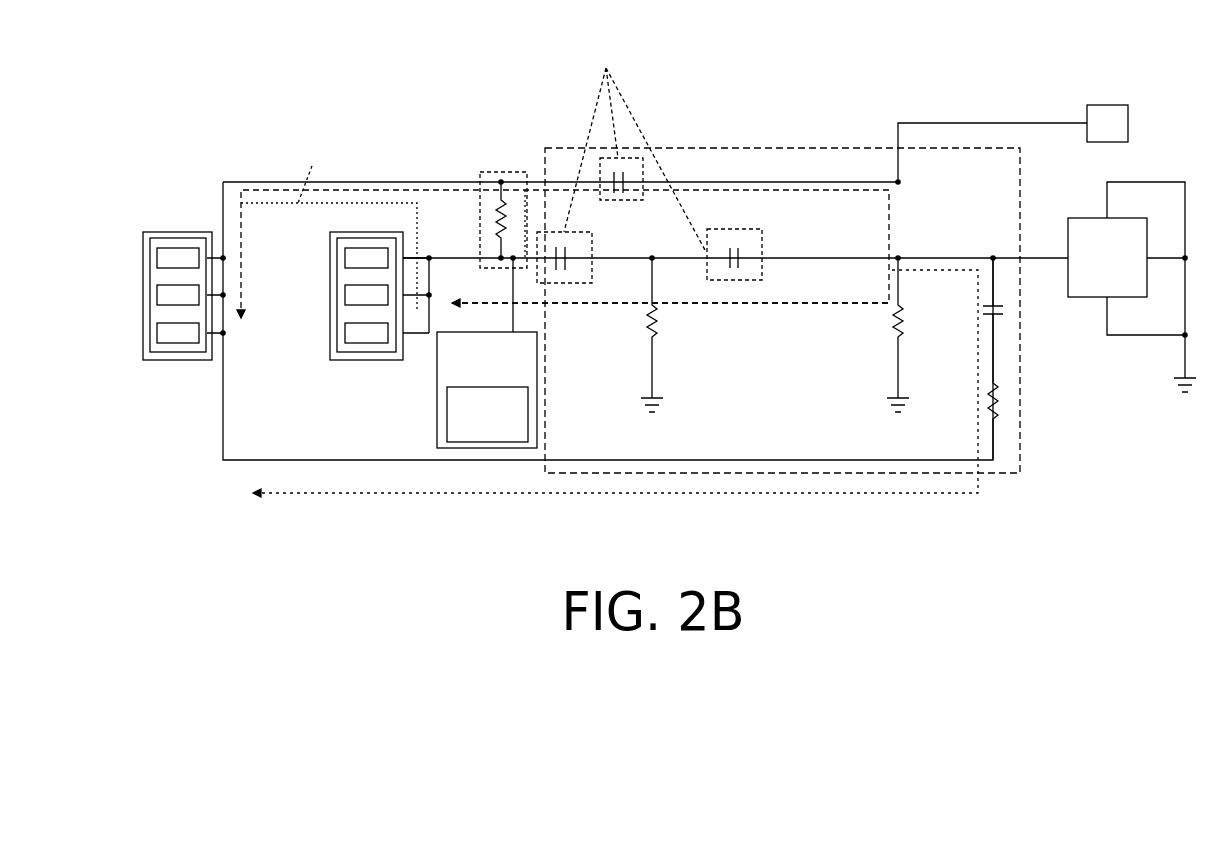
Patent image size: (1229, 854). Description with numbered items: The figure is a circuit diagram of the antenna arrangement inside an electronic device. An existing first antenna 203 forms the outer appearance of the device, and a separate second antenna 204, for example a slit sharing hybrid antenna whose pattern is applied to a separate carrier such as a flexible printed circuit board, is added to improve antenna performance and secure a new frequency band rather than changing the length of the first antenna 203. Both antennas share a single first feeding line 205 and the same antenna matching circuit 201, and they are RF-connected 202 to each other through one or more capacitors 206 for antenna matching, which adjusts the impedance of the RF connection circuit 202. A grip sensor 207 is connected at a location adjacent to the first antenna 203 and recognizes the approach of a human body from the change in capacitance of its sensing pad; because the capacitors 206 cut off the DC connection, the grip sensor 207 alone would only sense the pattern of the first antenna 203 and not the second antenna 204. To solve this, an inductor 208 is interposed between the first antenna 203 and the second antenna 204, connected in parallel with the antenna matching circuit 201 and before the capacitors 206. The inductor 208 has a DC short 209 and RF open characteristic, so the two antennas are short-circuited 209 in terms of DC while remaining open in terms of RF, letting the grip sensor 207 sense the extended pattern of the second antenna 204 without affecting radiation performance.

The antenna matching circuit 201 is at (722, 147).
The radio frequency (RF) connection circuit 202 is at (797, 304).
The first antenna 203 is at (362, 396).
The second antenna 204 is at (178, 398).
The first feeding line 205 is at (1107, 373).
The capacitor 206 is at (552, 32).
The grip sensor 207 is at (485, 450).
The inductor 208 is at (499, 136).
The DC short 209 is at (303, 136).